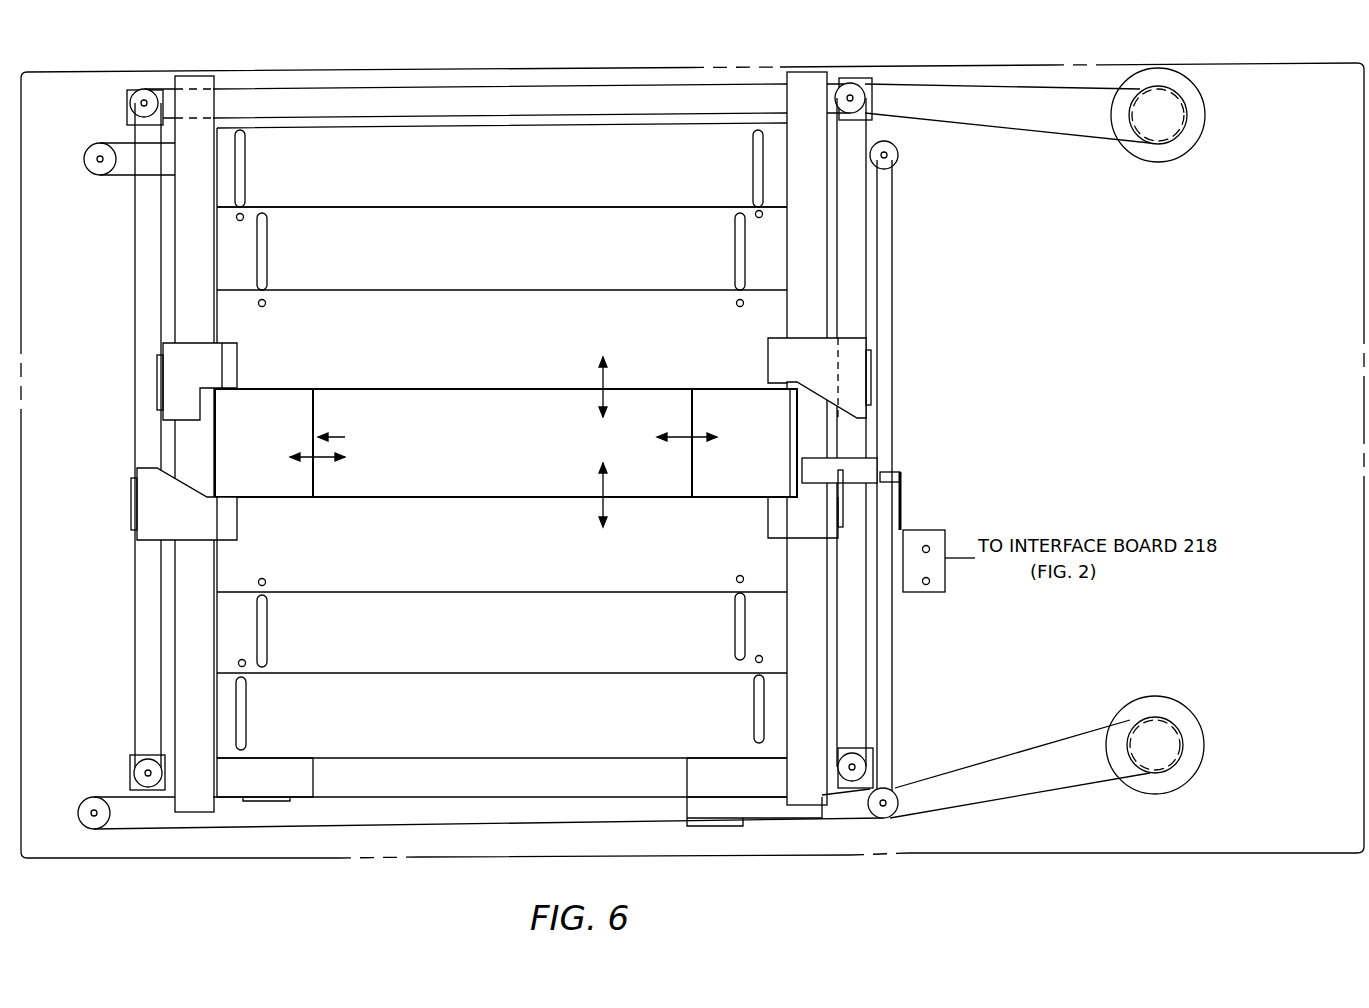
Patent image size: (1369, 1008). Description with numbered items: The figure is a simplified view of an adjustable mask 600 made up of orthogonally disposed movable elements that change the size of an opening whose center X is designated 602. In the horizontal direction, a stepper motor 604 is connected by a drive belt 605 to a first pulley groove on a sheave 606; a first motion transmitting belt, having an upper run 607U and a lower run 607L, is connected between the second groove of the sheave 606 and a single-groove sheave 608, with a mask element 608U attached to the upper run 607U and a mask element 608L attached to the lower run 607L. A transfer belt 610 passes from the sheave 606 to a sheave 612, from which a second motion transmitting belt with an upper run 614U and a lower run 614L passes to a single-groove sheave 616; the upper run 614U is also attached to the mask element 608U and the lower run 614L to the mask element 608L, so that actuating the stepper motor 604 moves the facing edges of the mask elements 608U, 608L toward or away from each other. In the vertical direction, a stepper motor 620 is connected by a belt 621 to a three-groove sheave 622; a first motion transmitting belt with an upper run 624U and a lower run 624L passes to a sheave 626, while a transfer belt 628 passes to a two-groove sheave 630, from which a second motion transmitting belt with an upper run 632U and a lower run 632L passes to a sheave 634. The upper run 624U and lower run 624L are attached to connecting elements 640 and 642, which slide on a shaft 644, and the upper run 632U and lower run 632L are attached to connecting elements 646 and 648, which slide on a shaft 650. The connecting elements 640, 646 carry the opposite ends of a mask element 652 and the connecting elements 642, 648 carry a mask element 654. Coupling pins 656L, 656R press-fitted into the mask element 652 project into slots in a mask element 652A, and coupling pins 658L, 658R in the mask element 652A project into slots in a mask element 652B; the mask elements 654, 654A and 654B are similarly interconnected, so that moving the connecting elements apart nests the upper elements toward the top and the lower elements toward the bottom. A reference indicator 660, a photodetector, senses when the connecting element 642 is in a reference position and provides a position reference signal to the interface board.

The mask 600 is at (392, 392).
The center X of the opening 602 is at (517, 442).
The stepper motor 604 is at (1155, 703).
The drive belt 605 is at (1030, 742).
The sheave 606 is at (893, 822).
The upper run of first motion transmitting belt 607U is at (492, 795).
The lower run of first motion transmitting belt 607L is at (553, 826).
The sheave 608 is at (88, 808).
The mask element 608U is at (291, 784).
The mask element 608L is at (754, 784).
The transfer belt 610 is at (893, 312).
The sheave 612 is at (898, 158).
The upper run of second motion transmitting belt 614U is at (120, 143).
The lower run of second motion transmitting belt 614L is at (118, 176).
The sheave 616 is at (90, 165).
The stepper motor 620 is at (1158, 150).
The belt 621 is at (1007, 126).
The sheave 622 is at (868, 92).
The upper run of first motion transmitting belt 624U is at (867, 237).
The lower run of first motion transmitting belt 624L is at (840, 282).
The sheave 626 is at (868, 772).
The transfer belt 628 is at (252, 90).
The sheave 630 is at (137, 96).
The upper run of second motion transmitting belt 632U is at (136, 282).
The lower run of second motion transmitting belt 632L is at (136, 334).
The sheave 634 is at (133, 775).
The connecting element 640 is at (850, 382).
The connecting element 642 is at (850, 465).
The shaft 644 is at (797, 440).
The connecting element 646 is at (175, 392).
The connecting element 648 is at (148, 513).
The shaft 650 is at (192, 630).
The mask element 652 is at (498, 346).
The mask element 652A is at (510, 256).
The mask element 652B is at (510, 199).
The mask element 654 is at (498, 546).
The mask element 654A is at (510, 636).
The mask element 654B is at (510, 723).
The coupling pin 656L is at (262, 308).
The coupling pin 656R is at (740, 308).
The coupling pin 658L is at (262, 212).
The coupling pin 658R is at (740, 212).
The reference indicator 660 is at (922, 515).